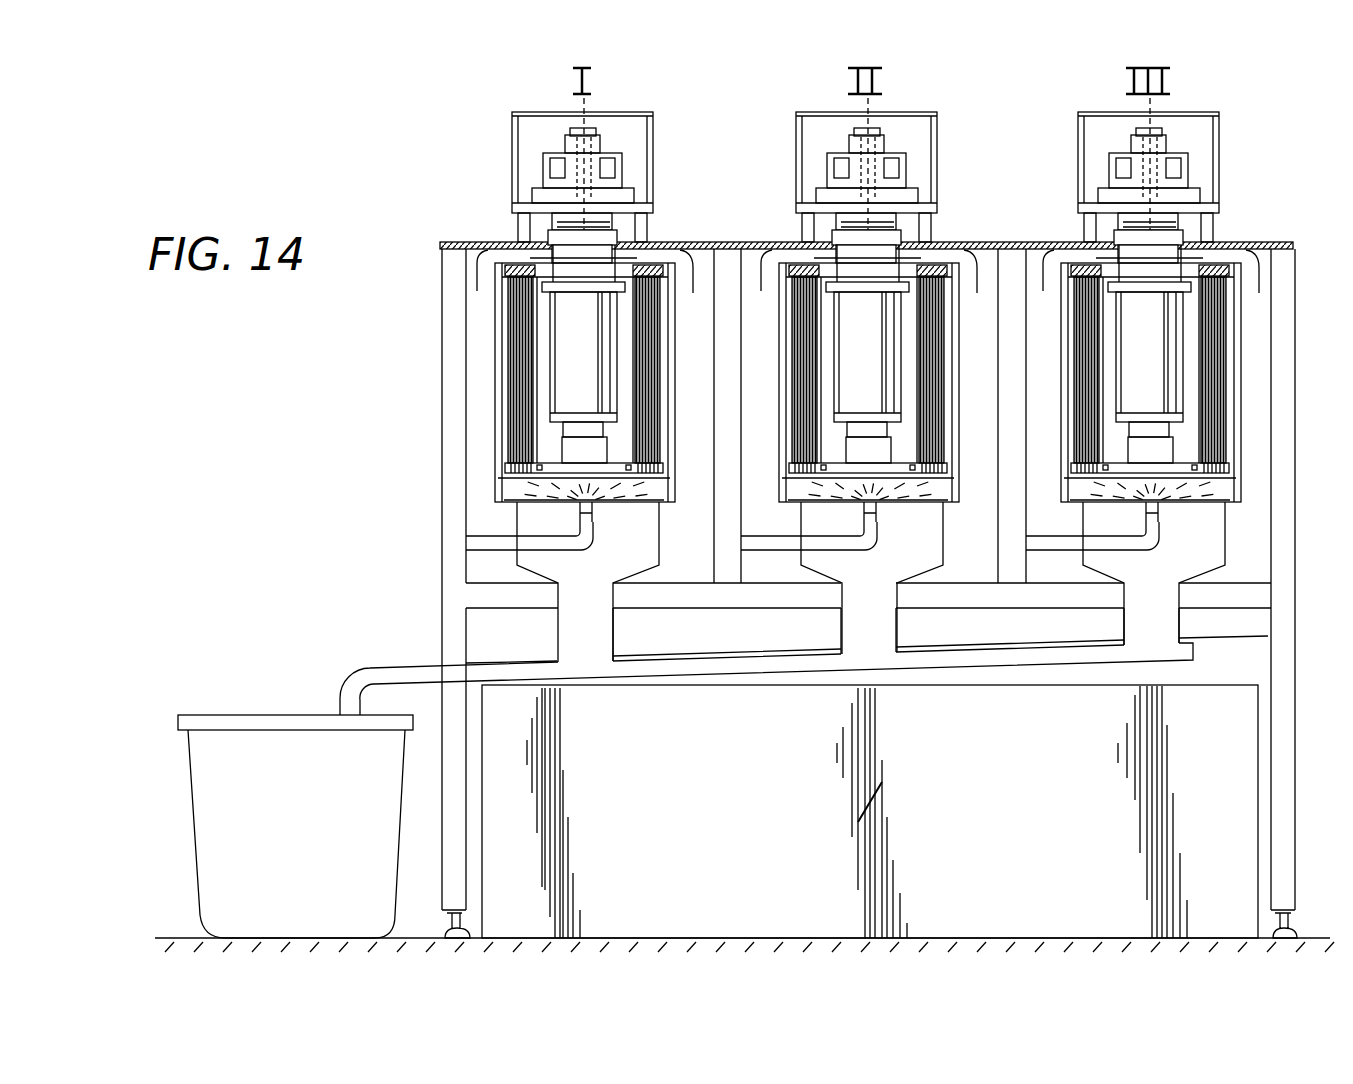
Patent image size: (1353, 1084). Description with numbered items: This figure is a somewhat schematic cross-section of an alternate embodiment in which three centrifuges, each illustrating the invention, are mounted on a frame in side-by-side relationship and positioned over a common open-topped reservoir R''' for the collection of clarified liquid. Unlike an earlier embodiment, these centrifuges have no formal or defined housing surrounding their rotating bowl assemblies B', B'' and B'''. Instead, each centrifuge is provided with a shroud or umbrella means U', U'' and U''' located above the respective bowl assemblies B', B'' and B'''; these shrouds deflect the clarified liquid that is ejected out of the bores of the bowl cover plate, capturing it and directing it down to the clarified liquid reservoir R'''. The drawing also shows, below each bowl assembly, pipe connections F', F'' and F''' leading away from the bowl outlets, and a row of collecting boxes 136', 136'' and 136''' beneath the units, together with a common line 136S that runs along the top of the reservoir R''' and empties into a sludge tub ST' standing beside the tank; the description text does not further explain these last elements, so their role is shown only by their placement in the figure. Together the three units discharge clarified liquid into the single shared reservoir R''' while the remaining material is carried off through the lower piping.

The shroud or umbrella means U' is at (564, 300).
The shroud or umbrella means U'' is at (831, 300).
The shroud or umbrella means U''' is at (1109, 300).
The rotating bowl assembly B' is at (604, 570).
The rotating bowl assembly B'' is at (886, 566).
The rotating bowl assembly B''' is at (1169, 561).
The filtrate discharge pipe of unit I F' is at (490, 506).
The filtrate discharge pipe of unit II F'' is at (809, 506).
The filtrate discharge pipe of unit III F''' is at (1092, 580).
The collecting box of unit I 136' is at (727, 634).
The collecting box of unit II 136'' is at (1010, 630).
The collecting box of unit III 136''' is at (1226, 625).
The sludge collecting pipe 136S is at (740, 653).
The sludge tub ST' is at (250, 826).
The clarified liquid reservoir R''' is at (870, 811).